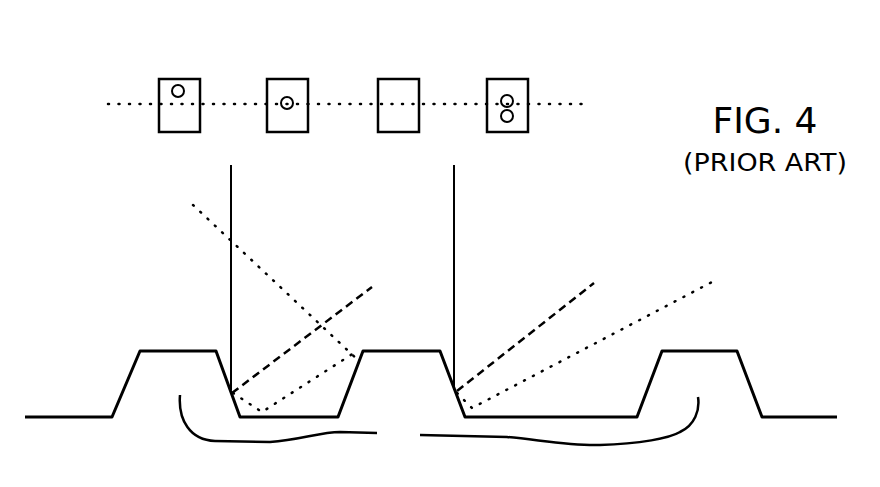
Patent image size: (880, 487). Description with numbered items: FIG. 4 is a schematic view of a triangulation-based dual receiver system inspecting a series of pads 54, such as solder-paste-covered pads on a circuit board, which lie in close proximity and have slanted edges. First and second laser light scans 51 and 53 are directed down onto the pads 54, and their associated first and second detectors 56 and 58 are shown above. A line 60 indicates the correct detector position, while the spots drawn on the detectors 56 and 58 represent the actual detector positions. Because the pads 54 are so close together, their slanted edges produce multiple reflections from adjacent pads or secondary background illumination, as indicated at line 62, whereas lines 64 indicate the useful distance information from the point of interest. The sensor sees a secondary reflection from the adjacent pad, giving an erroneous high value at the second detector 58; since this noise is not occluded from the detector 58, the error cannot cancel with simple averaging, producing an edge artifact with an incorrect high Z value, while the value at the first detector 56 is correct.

The first laser light scan 51 is at (232, 200).
The second laser light scan 53 is at (455, 203).
The pads 54 is at (400, 375).
The first detector 56 is at (295, 79).
The second detector 58 is at (187, 79).
The line indicating correct detector position 60 is at (572, 103).
The line of secondary background illumination 62 is at (204, 214).
The lines of useful distance information 64 is at (350, 302).